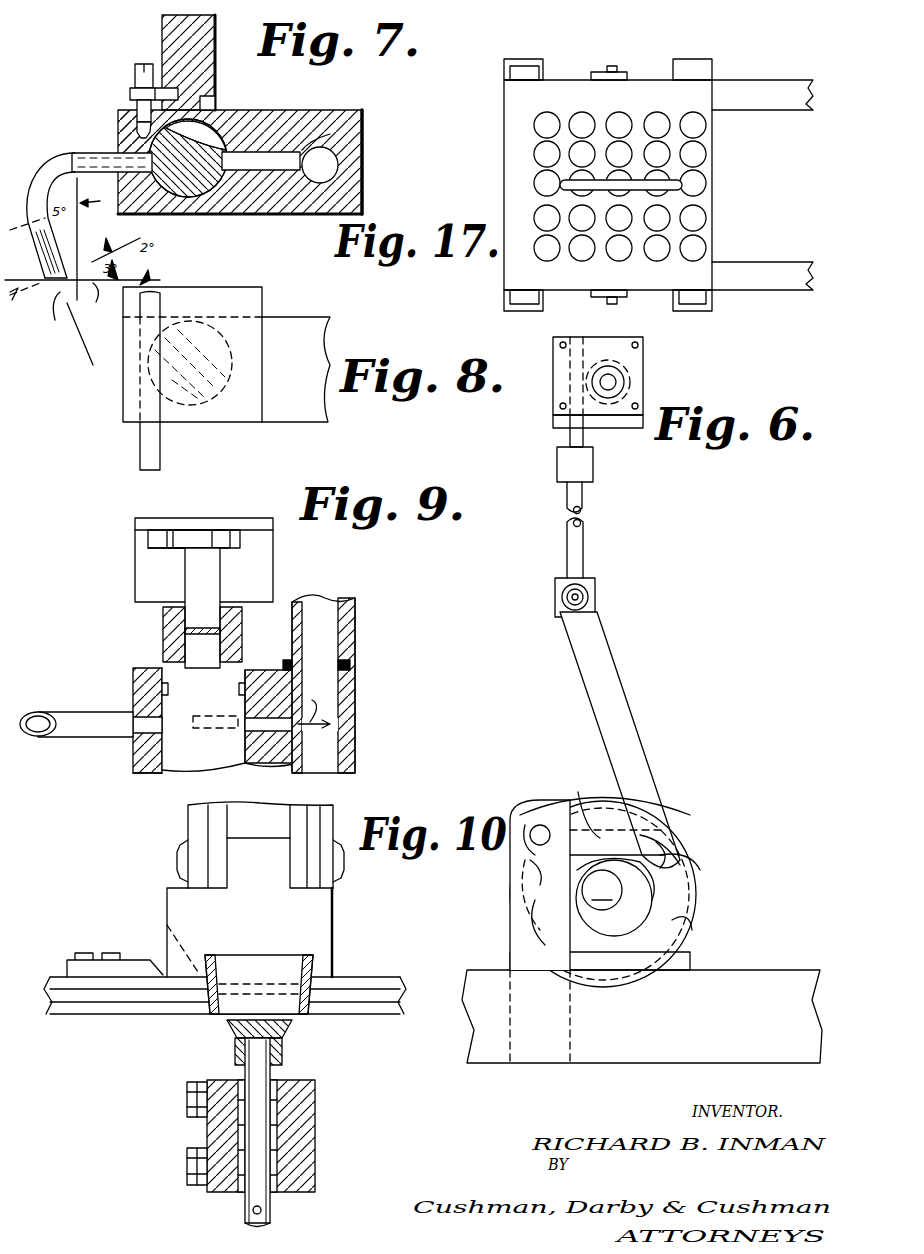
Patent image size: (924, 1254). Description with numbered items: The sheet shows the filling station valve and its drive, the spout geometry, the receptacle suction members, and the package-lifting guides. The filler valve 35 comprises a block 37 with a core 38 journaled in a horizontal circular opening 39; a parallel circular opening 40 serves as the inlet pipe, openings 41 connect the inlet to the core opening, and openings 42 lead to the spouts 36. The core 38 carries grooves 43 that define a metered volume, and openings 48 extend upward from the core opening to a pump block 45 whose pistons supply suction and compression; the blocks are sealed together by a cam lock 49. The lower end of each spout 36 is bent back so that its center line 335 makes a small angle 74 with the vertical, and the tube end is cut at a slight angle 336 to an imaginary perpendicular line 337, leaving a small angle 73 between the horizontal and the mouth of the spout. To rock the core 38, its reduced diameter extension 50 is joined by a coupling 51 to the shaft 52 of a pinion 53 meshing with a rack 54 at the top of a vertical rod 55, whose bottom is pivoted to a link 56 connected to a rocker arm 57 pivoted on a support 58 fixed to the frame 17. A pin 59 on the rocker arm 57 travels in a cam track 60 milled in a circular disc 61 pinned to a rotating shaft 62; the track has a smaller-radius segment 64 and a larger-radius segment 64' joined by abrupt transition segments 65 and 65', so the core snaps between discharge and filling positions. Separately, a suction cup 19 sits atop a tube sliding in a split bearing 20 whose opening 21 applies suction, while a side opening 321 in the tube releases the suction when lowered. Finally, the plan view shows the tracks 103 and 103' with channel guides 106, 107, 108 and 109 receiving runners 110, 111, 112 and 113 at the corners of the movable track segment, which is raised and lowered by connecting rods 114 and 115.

In FIG. 6, the frame 17 is at (618, 1062).
In FIG. 10, the rubber suction cup 19 is at (282, 1053).
In FIG. 10, the bearing 20 is at (275, 1192).
In FIG. 10, the opening 21 is at (276, 1134).
In FIG. 10, the opening 321 is at (262, 1211).
In FIG. 7, the filler valve 35 is at (372, 124).
In FIG. 7, the spout 36 is at (50, 168).
In FIG. 9, the spout 36 is at (98, 725).
In FIG. 7, the block 37 is at (365, 182).
In FIG. 7, the core 38 is at (190, 198).
In FIG. 9, the core 38 is at (212, 752).
In FIG. 7, the circular opening 39 is at (212, 142).
In FIG. 7, the circular opening (inlet pipe) 40 is at (332, 134).
In FIG. 9, the circular opening (inlet pipe) 40 is at (316, 770).
In FIG. 7, the opening 41 is at (278, 172).
In FIG. 7, the opening 42 is at (116, 152).
In FIG. 7, the groove 43 is at (250, 128).
In FIG. 7, the block 45 is at (217, 23).
In FIG. 7, the opening 48 is at (202, 106).
In FIG. 7, the cam lock 49 is at (128, 84).
In FIG. 9, the reduced diameter extension 50 is at (225, 648).
In FIG. 9, the coupling 51 is at (168, 636).
In FIG. 9, the shaft 52 is at (208, 590).
In FIG. 9, the pinion 53 is at (222, 540).
In FIG. 6, the pinion 53 is at (615, 395).
In FIG. 8, the rack 54 is at (145, 445).
In FIG. 9, the rack 54 is at (160, 538).
In FIG. 6, the rack 54 is at (568, 440).
In FIG. 6, the vertical rod 55 is at (580, 545).
In FIG. 6, the link 56 is at (632, 735).
In FIG. 6, the rocker arm 57 is at (700, 815).
In FIG. 6, the support 58 is at (515, 940).
In FIG. 6, the pin 59 is at (598, 790).
In FIG. 6, the cam track 60 is at (700, 906).
In FIG. 6, the circular disc 61 is at (684, 856).
In FIG. 6, the shaft 62 is at (615, 897).
In FIG. 6, the circular segment 64 is at (490, 886).
In FIG. 6, the circular segment 64' is at (718, 930).
In FIG. 6, the connecting segment 65 is at (499, 922).
In FIG. 6, the connecting segment 65' is at (714, 862).
In FIG. 7, the angle 73 is at (160, 280).
In FIG. 7, the angle 74 is at (69, 271).
In FIG. 17, the track 103 is at (762, 117).
In FIG. 17, the track 103' is at (762, 257).
In FIG. 17, the guide 106 is at (714, 72).
In FIG. 17, the guide 107 is at (543, 60).
In FIG. 17, the guide 108 is at (518, 300).
In FIG. 17, the guide 109 is at (690, 305).
In FIG. 17, the runner 110 is at (700, 72).
In FIG. 17, the runner 111 is at (516, 70).
In FIG. 17, the runner 112 is at (510, 300).
In FIG. 17, the runner 113 is at (700, 302).
In FIG. 17, the connecting rod 114 is at (620, 68).
In FIG. 17, the connecting rod 115 is at (615, 300).
In FIG. 7, the center line (axis) 335 is at (31, 253).
In FIG. 7, the angle 336 is at (88, 292).
In FIG. 7, the imaginary line 337 is at (22, 313).